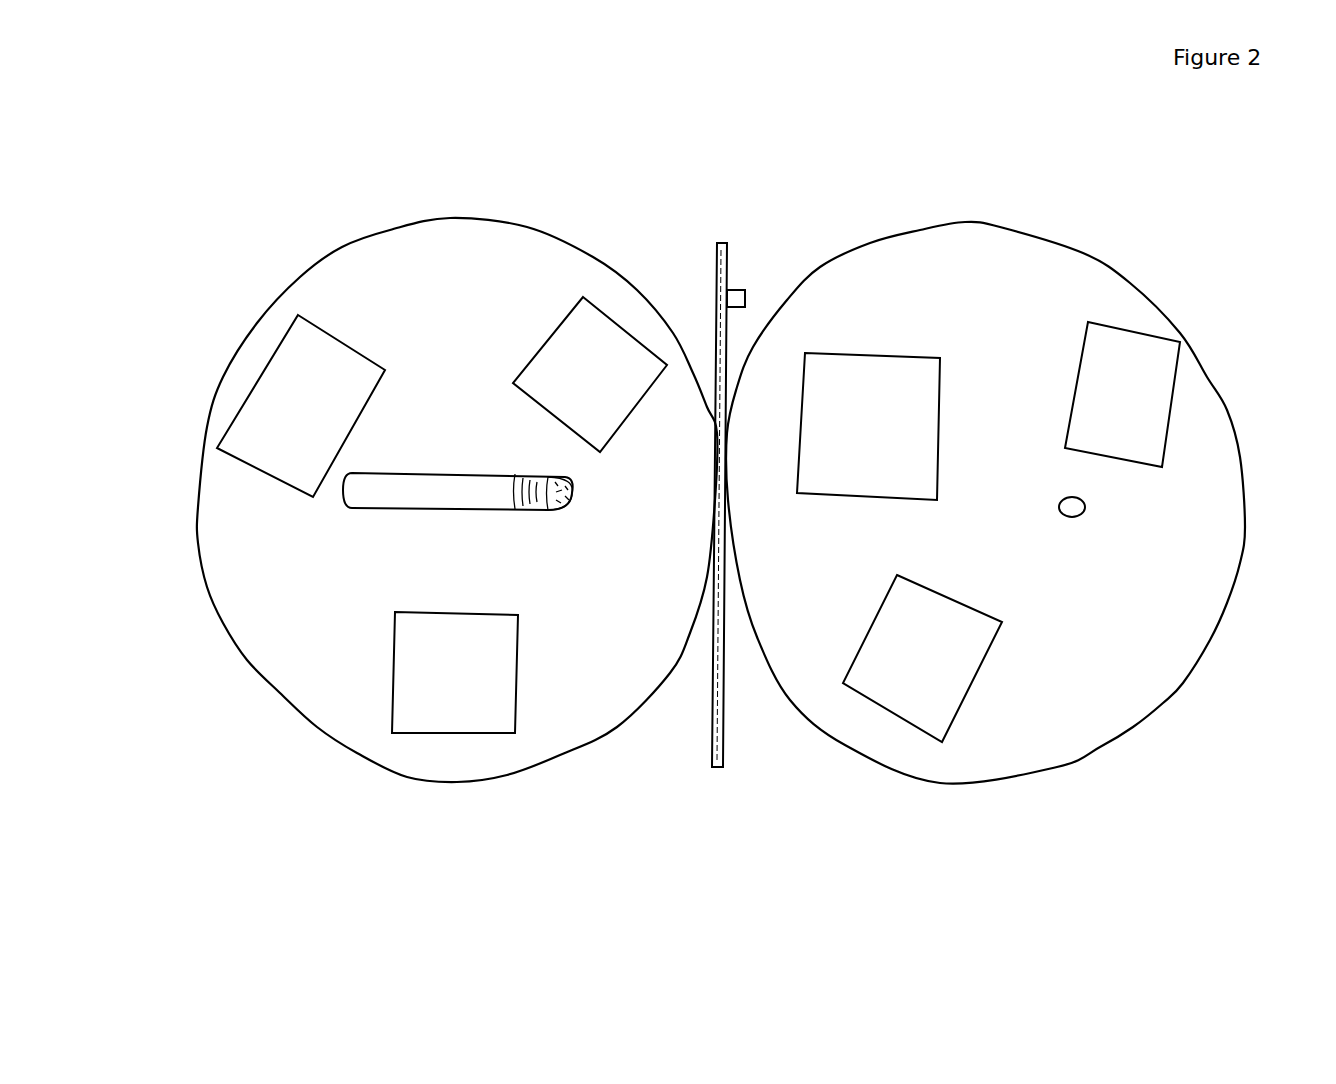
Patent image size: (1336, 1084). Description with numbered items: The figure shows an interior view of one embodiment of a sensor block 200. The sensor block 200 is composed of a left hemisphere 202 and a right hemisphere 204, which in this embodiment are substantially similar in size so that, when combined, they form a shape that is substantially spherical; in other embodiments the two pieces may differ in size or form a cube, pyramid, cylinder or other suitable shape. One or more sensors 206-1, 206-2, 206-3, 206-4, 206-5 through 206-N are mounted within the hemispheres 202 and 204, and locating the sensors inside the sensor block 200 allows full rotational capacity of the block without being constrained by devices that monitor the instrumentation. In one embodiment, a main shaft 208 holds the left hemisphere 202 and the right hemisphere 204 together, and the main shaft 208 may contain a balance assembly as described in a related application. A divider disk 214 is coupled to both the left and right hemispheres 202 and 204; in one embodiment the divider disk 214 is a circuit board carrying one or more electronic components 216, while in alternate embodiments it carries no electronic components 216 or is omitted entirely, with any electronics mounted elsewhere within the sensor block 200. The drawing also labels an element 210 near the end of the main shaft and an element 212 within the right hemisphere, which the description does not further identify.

The sensor block 200 is at (1123, 903).
The left hemisphere 202 is at (342, 250).
The right hemisphere 204 is at (1082, 253).
The sensor 206-1 is at (892, 377).
The sensor 206-2 is at (1140, 378).
The sensor 206-3 is at (900, 713).
The sensor 206-4 is at (460, 731).
The sensor 206-5 is at (265, 432).
The sensor 206-N is at (590, 342).
The main shaft 208 is at (376, 607).
The cigarette end 210 is at (540, 512).
The sensor 212 is at (1190, 491).
The divider disk 214 is at (727, 243).
The electronic components 216 is at (745, 290).